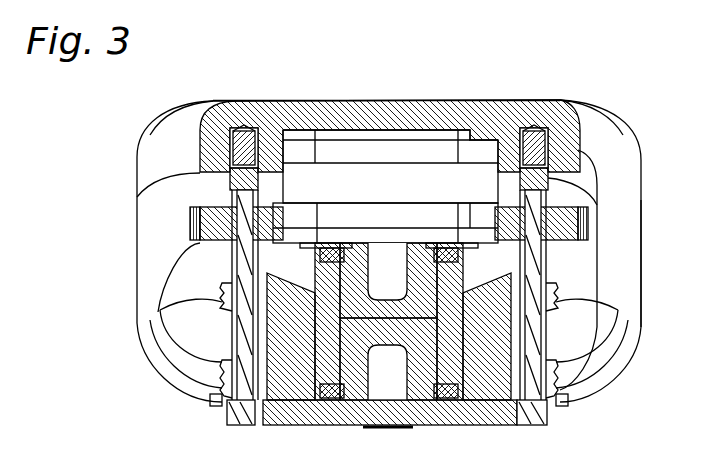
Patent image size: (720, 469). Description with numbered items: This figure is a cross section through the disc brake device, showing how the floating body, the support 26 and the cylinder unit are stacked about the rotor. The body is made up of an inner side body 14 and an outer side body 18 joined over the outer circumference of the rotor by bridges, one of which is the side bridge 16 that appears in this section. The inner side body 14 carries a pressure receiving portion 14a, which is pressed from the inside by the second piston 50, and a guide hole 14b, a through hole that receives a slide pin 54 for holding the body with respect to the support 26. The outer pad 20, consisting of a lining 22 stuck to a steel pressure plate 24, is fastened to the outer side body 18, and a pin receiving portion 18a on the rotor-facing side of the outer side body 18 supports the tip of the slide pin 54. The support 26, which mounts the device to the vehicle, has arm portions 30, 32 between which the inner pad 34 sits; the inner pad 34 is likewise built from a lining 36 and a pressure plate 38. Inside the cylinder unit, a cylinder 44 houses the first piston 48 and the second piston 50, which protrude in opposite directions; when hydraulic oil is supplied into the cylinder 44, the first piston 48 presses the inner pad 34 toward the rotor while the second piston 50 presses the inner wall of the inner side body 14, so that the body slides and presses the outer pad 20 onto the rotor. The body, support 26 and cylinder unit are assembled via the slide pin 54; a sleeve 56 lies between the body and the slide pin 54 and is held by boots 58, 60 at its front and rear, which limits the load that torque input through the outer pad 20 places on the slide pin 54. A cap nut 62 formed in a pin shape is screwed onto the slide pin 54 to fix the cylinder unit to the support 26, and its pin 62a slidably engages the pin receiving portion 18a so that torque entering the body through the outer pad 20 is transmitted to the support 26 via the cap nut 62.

The inner side body 14 is at (440, 424).
The pressure receiving portion 14a is at (340, 421).
The guide hole 14b is at (210, 347).
The side bridge 16 is at (143, 243).
The outer side body 18 is at (452, 100).
The pin receiving portion 18a is at (255, 101).
The outer side brake pad 20 is at (401, 124).
The lining 22 is at (333, 160).
The pressure plate 24 is at (331, 101).
The support 26 is at (645, 252).
The arm portion 30 is at (585, 215).
The arm portion 32 is at (190, 258).
The inner side brake pad 34 is at (398, 206).
The lining 36 is at (443, 210).
The pressure plate 38 is at (339, 212).
The cylinder 44 is at (342, 286).
The first piston 48 is at (455, 300).
The second piston 50 is at (455, 333).
The slide pin 54 is at (243, 426).
The sleeve 56 is at (219, 378).
The boot 58 is at (218, 295).
The boot 60 is at (211, 406).
The cap nut 62 is at (226, 182).
The pin 62a is at (200, 150).